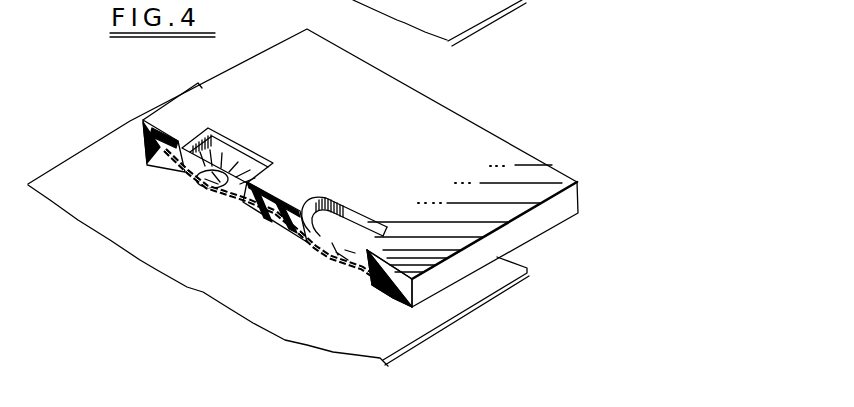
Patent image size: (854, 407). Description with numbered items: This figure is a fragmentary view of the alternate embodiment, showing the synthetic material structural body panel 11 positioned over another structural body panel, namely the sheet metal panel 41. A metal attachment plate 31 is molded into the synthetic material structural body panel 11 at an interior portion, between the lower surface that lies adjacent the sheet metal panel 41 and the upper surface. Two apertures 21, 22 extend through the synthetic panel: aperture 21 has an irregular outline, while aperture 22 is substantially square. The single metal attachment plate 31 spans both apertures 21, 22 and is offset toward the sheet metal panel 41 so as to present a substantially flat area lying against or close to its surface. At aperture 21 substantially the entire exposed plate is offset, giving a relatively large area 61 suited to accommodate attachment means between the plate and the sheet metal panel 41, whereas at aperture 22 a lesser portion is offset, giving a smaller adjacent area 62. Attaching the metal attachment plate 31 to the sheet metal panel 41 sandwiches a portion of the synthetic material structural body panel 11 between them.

The synthetic material structural body panel 11 is at (515, 162).
The aperture 21 is at (360, 213).
The aperture 22 is at (245, 145).
The metal attachment plate 31 is at (237, 200).
The sheet metal panel 41 is at (505, 259).
The area 61 is at (352, 263).
The bowl-shaped cavity 62 is at (217, 188).